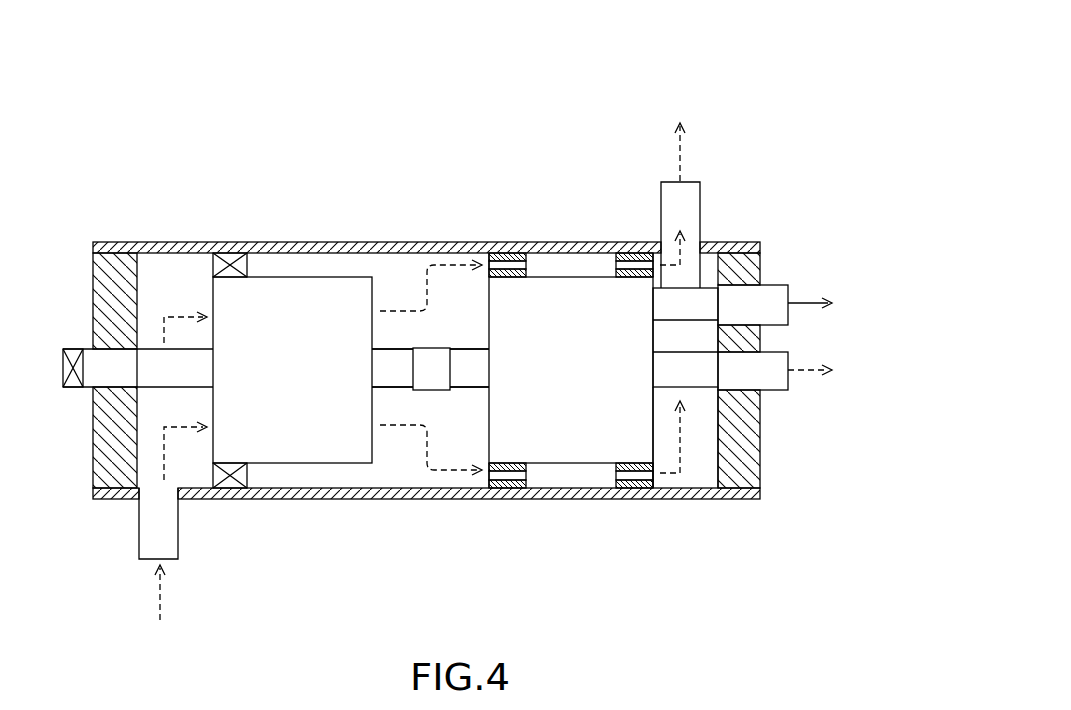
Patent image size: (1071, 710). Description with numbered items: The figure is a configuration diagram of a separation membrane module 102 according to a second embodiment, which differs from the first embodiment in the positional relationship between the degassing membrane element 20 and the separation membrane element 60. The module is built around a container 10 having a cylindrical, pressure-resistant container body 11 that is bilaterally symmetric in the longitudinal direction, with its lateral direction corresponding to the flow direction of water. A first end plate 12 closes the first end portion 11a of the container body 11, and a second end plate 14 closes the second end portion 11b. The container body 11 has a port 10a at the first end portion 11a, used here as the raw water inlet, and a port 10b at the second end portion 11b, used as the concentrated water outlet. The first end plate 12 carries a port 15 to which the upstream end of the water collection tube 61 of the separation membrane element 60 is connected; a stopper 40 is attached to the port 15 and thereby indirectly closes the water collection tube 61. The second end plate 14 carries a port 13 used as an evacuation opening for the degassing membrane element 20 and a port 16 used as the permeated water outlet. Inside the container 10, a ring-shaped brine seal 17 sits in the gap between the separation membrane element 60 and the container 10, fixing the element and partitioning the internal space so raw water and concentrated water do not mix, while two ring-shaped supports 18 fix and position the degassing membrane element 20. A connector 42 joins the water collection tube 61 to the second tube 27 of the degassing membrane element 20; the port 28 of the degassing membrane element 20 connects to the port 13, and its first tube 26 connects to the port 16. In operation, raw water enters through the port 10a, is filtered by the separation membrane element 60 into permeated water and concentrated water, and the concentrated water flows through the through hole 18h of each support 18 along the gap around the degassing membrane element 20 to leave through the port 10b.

The separation membrane module 102 is at (568, 90).
The container 10 is at (338, 238).
The container body 11 is at (700, 500).
The first end portion 11a is at (112, 252).
The second end portion 11b is at (740, 498).
The first end plate 12 is at (97, 475).
The second end plate 14 is at (752, 470).
The port 10a is at (138, 532).
The port 10b is at (700, 196).
The port 13 is at (778, 284).
The port 16 is at (778, 391).
The port 15 is at (90, 348).
The stopper 40 is at (72, 390).
The brine seal 17 is at (232, 258).
The separation membrane element 60 is at (302, 432).
The water collection tube 61 is at (391, 388).
The connector 42 is at (435, 378).
The second tube 27 is at (472, 350).
The degassing membrane element 20 is at (565, 316).
The support 18 is at (523, 480).
The through hole 18h is at (503, 478).
The port 28 is at (700, 288).
The first tube 26 is at (687, 388).